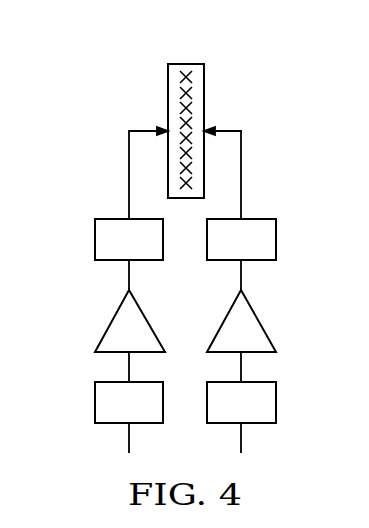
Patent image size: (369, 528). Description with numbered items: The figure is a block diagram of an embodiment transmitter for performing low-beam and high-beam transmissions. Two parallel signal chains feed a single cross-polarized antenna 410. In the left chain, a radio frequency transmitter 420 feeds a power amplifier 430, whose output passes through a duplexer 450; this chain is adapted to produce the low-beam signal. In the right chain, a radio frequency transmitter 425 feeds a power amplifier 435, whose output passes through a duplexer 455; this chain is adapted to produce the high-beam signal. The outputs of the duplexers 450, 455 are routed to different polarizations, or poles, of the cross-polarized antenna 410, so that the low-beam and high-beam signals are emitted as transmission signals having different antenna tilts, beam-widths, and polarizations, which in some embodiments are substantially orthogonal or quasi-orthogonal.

The cross-polarized antenna 410 is at (183, 63).
The radio frequency transmitter 420 is at (95, 402).
The radio frequency transmitter 425 is at (276, 402).
The power amplifier 430 is at (111, 323).
The power amplifier 435 is at (259, 323).
The duplexer 450 is at (95, 238).
The duplexer 455 is at (276, 238).